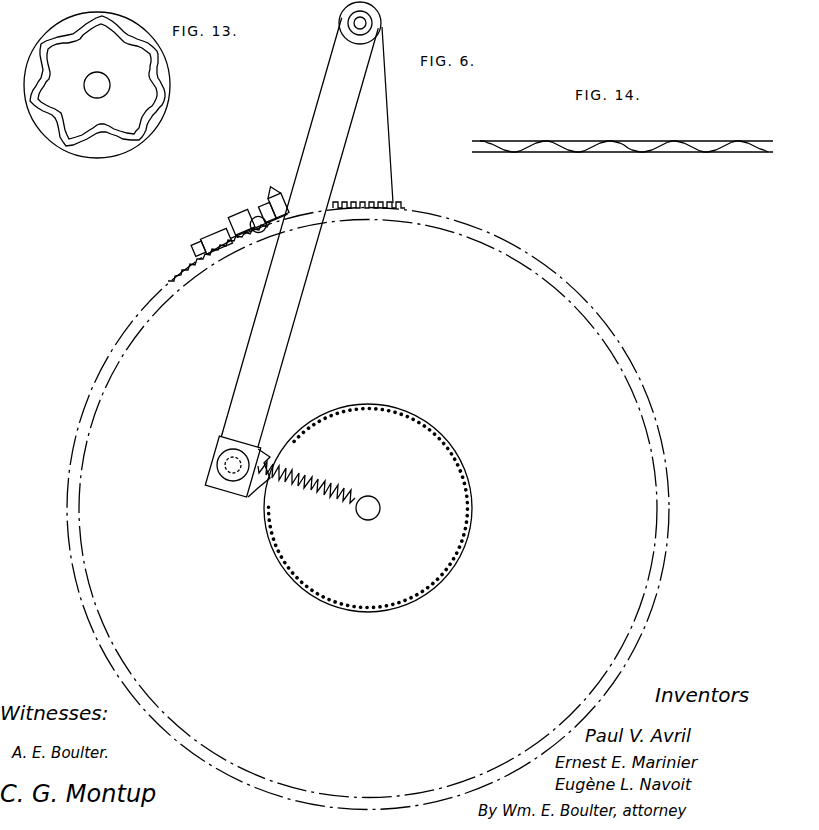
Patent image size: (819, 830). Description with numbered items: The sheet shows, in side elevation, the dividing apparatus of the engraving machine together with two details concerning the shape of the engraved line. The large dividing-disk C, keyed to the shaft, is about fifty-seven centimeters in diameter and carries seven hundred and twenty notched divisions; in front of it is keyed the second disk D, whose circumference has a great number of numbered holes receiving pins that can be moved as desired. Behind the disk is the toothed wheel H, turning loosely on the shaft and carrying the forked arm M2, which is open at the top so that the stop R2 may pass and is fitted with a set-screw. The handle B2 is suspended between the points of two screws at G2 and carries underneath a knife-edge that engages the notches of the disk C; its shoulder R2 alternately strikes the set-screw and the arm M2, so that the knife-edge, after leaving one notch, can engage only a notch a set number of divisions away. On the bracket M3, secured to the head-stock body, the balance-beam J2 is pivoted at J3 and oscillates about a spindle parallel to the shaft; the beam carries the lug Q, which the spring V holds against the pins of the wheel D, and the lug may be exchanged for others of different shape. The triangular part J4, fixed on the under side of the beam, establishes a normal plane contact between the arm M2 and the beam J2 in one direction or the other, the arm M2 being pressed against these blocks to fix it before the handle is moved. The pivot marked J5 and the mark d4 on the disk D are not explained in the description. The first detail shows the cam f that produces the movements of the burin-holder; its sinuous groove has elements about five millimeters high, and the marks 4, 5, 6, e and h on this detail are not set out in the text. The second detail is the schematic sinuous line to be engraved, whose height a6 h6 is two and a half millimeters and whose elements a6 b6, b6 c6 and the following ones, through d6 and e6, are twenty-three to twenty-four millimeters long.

In FIG. 6, the dividing-disk C is at (650, 638).
In FIG. 6, the toothed wheel H is at (150, 289).
In FIG. 6, the balance-beam J2 is at (291, 257).
In FIG. 6, the pivot of the balance-beam J3 is at (285, 199).
In FIG. 6, the triangular part J4 is at (339, 210).
In FIG. 6, the arm pivot J5 is at (382, 27).
In FIG. 6, the bracket M3 is at (374, 115).
In FIG. 6, the forked arm M2 is at (236, 220).
In FIG. 6, the handle B2 is at (268, 200).
In FIG. 6, the stop R2 is at (258, 216).
In FIG. 6, the screw points of arm E G2 is at (202, 243).
In FIG. 6, the second disk D is at (368, 508).
In FIG. 6, the spring V is at (306, 482).
In FIG. 6, the dial graduations d4 is at (458, 529).
In FIG. 6, the lug Q is at (252, 493).
In FIG. 13, the wavy band 5 is at (107, 73).
In FIG. 13, the hub h is at (63, 68).
In FIG. 13, the band lobe e is at (25, 108).
In FIG. 13, the cam f is at (70, 140).
In FIG. 13, the band segment 6 is at (102, 93).
In FIG. 13, the band segment 4 is at (129, 116).
In FIG. 14, the height point of the sinuous line h6 is at (622, 143).
In FIG. 14, the point of the sinuous line a6 is at (496, 153).
In FIG. 14, the point of the sinuous line b6 is at (577, 164).
In FIG. 14, the point of the sinuous line c6 is at (631, 164).
In FIG. 14, the wave section d d6 is at (689, 164).
In FIG. 14, the wave section e e6 is at (742, 164).